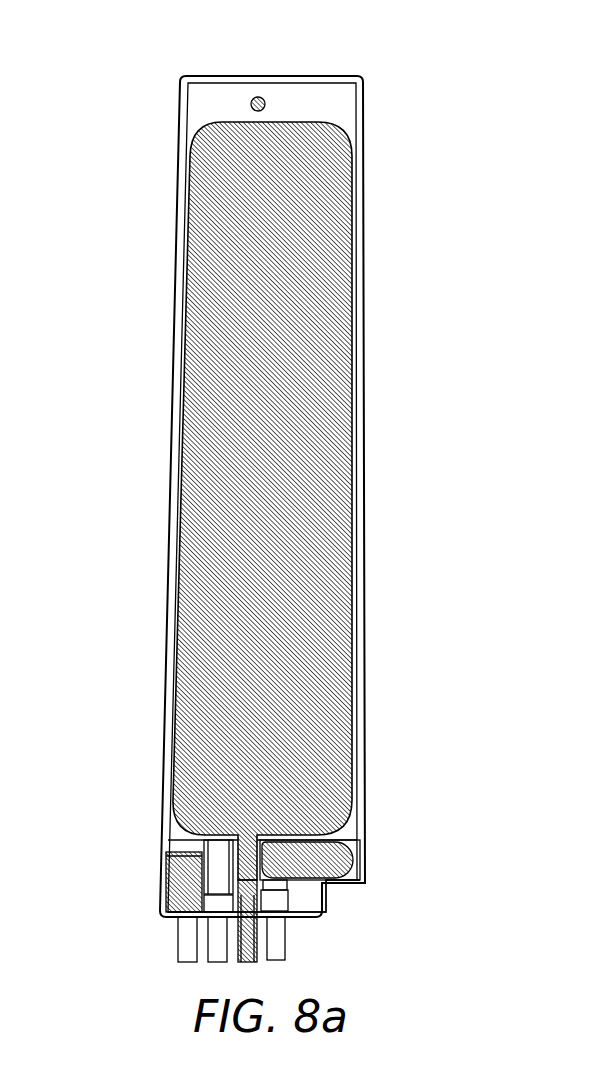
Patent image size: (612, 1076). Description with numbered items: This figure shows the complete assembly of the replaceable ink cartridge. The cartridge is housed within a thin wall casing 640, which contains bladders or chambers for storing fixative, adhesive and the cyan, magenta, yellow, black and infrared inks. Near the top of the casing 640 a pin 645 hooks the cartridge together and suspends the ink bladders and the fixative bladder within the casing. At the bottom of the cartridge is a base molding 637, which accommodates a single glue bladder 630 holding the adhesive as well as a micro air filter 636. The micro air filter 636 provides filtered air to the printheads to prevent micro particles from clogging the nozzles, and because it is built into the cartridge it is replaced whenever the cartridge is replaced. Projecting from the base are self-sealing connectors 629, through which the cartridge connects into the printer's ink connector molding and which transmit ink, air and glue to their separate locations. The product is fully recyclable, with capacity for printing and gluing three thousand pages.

The thin wall casing 640 is at (365, 220).
The pin 645 is at (263, 98).
The glue bladder 630 is at (343, 853).
The micro air filter 636 is at (172, 873).
The base molding 637 is at (328, 913).
The self-sealing connectors 629 is at (256, 929).